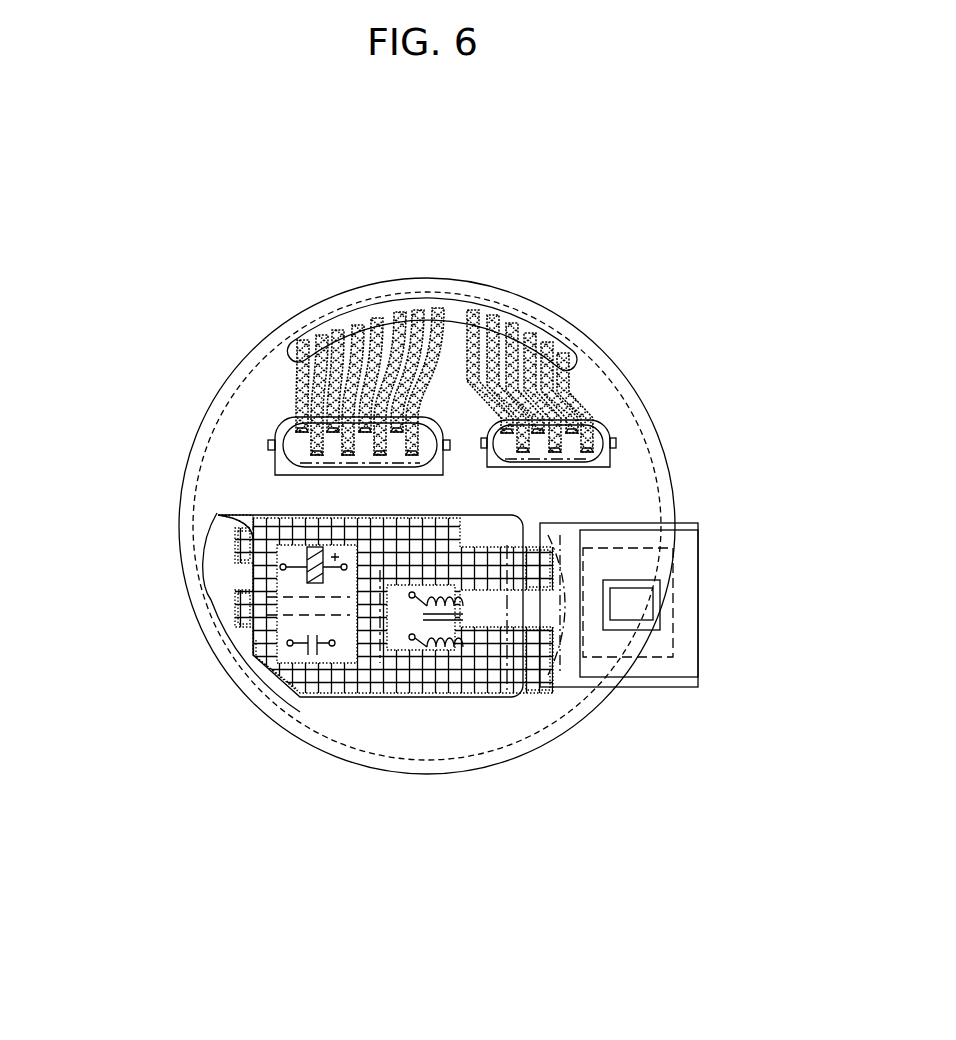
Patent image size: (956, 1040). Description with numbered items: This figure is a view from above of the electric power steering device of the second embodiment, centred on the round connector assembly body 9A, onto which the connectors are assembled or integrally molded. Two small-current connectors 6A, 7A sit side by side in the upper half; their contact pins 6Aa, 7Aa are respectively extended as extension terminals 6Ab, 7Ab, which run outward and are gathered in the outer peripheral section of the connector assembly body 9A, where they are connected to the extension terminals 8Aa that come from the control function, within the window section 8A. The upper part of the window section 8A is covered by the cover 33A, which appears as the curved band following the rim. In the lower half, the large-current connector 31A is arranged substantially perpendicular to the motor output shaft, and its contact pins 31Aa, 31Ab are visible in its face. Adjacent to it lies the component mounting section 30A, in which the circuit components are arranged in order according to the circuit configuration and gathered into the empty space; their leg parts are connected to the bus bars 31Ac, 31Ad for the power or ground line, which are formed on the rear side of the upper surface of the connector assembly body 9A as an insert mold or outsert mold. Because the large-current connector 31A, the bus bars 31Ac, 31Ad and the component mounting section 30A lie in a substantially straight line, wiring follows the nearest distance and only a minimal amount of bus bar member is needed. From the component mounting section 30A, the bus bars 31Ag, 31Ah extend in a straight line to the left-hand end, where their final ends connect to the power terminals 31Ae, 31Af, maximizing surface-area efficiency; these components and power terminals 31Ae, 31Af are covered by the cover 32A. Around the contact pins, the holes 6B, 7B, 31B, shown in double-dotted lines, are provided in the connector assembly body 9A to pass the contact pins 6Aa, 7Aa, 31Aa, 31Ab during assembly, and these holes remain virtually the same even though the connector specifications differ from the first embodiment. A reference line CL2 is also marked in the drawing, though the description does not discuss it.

The connector assembly body 9A is at (423, 777).
The cover 33A is at (517, 313).
The window section 8A is at (403, 303).
The extension terminals 8Aa is at (327, 337).
The small-current connector 7A is at (285, 432).
The contact pins 7Aa is at (365, 405).
The extension terminals 7Ab is at (325, 385).
The hole 7B is at (300, 455).
The extension terminals 6Ab is at (582, 378).
The small-current connector 6A is at (612, 432).
The contact pins 6Aa is at (587, 447).
The hole 6B is at (612, 465).
The component mounting section 30A is at (420, 690).
The bus bar 31Ag is at (220, 513).
The power terminal 31Ae is at (235, 552).
The power terminal 31Af is at (235, 607).
The bus bar 31Ah is at (243, 647).
The bus bar 31Ac is at (548, 548).
The bus bar 31Ad is at (555, 692).
The center line CL2 is at (505, 703).
The cover 32A is at (316, 697).
The large-current connector 31A is at (700, 668).
The hole 31B is at (572, 690).
The contact pin 31Aa is at (673, 578).
The contact pin 31Ab is at (677, 643).